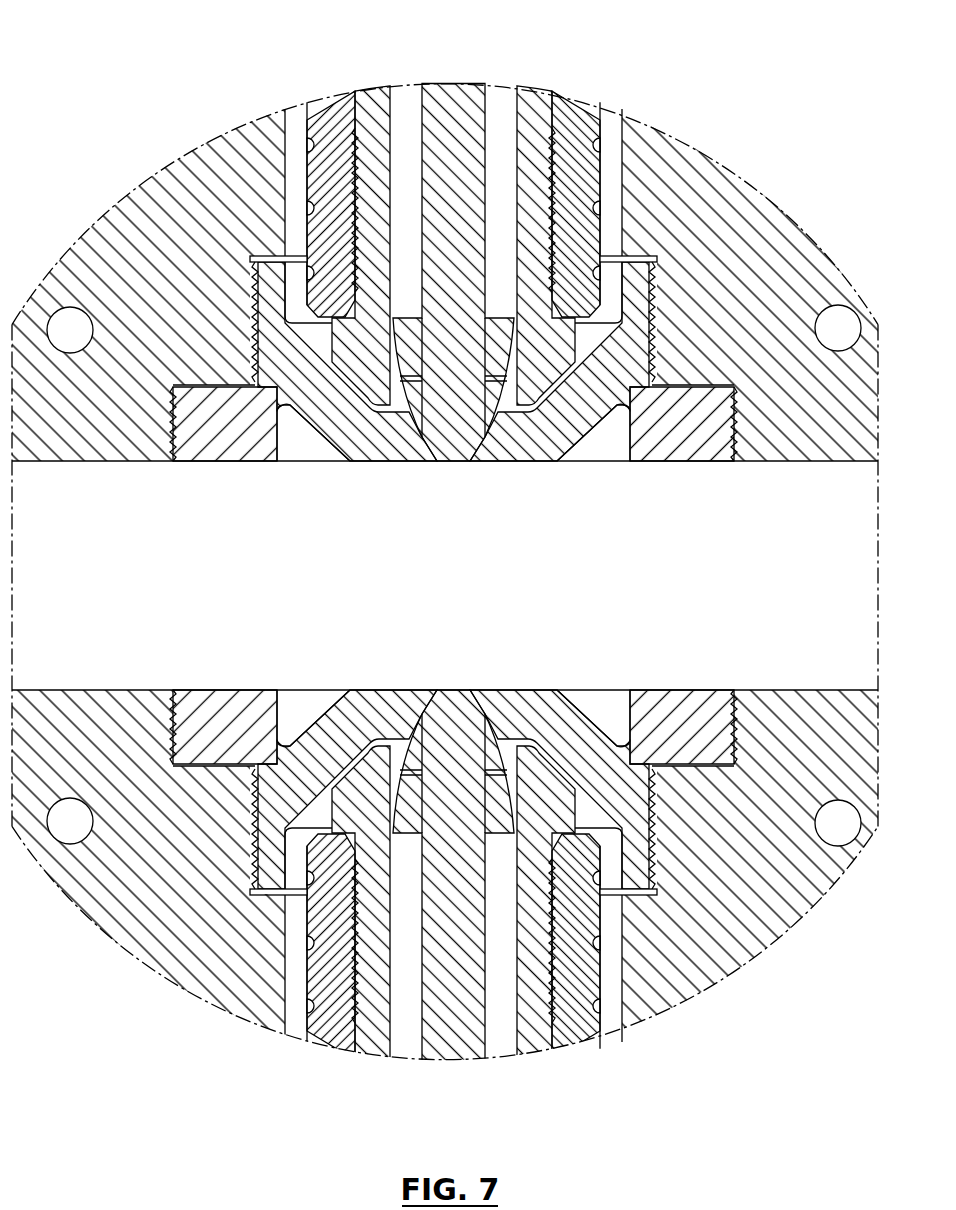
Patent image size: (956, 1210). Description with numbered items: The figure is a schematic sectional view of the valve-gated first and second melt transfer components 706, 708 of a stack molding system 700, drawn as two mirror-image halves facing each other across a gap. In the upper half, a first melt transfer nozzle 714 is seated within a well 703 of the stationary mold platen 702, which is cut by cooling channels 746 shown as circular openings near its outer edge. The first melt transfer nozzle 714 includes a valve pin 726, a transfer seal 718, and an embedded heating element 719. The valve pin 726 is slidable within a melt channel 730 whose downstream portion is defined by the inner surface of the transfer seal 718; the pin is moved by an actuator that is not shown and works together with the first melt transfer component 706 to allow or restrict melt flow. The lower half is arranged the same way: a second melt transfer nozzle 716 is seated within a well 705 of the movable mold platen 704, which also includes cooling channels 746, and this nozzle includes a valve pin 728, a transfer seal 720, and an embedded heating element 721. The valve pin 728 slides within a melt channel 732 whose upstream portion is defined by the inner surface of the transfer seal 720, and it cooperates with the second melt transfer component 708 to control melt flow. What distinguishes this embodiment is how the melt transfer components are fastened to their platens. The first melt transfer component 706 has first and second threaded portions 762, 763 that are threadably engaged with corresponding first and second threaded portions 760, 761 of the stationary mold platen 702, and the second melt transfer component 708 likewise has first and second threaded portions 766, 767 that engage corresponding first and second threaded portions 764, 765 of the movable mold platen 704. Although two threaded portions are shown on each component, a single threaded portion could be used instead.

The stack molding system 700 is at (78, 150).
The stationary mold platen 702 is at (790, 205).
The well 703 is at (288, 168).
The movable mold platen 704 is at (805, 870).
The well 705 is at (300, 910).
The first melt transfer component 706 is at (680, 430).
The second melt transfer component 708 is at (690, 712).
The first melt transfer nozzle 714 is at (297, 125).
The second melt transfer nozzle 716 is at (306, 995).
The transfer seal 718 is at (540, 210).
The embedded heating element 719 is at (597, 135).
The transfer seal 720 is at (365, 935).
The embedded heating element 721 is at (600, 890).
The valve pin 726 is at (497, 140).
The valve pin 728 is at (495, 1000).
The melt channel 730 is at (400, 224).
The melt channel 732 is at (398, 1023).
The cooling channels 746 is at (832, 302).
The first threaded portion 760 is at (178, 445).
The second threaded portion 761 is at (262, 395).
The first threaded portion 762 is at (172, 440).
The second threaded portion 763 is at (255, 320).
The first threaded portion 764 is at (190, 695).
The second threaded portion 765 is at (290, 735).
The first threaded portion 766 is at (165, 705).
The second threaded portion 767 is at (250, 790).